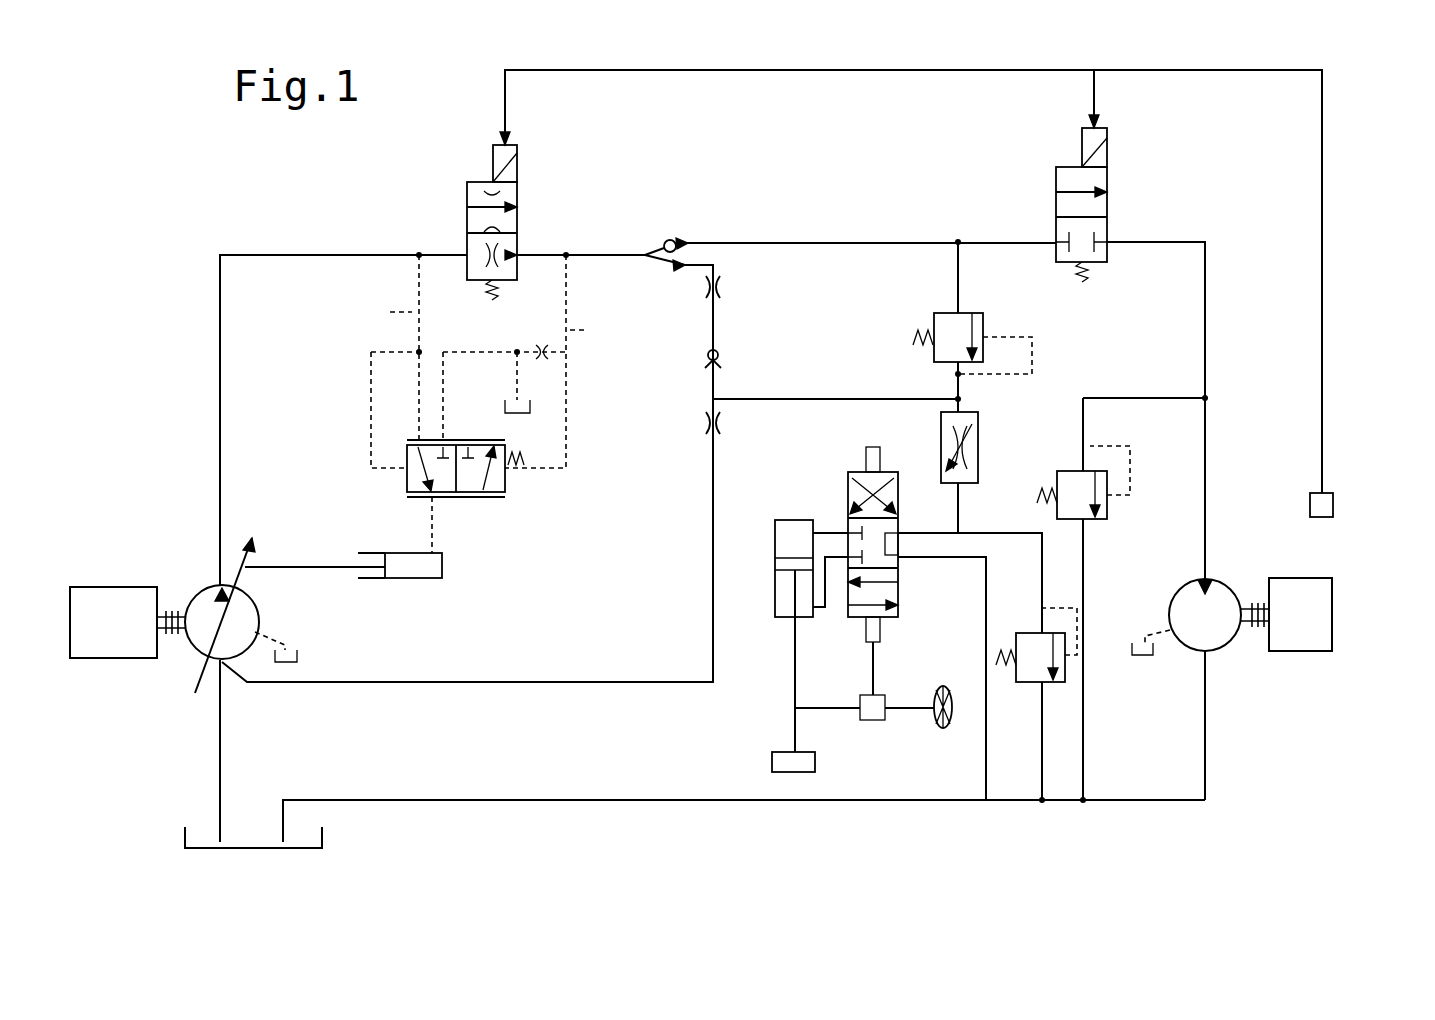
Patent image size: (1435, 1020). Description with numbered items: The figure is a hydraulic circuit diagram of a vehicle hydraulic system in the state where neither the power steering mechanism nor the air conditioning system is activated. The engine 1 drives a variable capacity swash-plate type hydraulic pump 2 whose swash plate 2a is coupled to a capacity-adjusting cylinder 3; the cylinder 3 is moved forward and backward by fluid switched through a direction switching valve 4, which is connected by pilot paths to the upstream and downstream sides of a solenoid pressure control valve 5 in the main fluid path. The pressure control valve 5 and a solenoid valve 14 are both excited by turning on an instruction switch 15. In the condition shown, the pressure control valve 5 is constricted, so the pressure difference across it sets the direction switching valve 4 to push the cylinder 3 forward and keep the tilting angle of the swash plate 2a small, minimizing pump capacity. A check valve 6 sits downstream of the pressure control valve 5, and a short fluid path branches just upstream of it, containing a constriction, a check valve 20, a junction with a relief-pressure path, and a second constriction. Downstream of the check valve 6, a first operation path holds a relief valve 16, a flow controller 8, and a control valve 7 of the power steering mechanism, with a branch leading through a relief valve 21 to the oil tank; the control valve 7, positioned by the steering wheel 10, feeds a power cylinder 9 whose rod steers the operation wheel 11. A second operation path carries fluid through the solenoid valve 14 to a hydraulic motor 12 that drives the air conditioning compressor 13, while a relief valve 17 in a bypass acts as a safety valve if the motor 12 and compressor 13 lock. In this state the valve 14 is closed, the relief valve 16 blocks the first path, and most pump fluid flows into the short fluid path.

The engine 1 is at (105, 658).
The hydraulic pump 2 is at (210, 586).
The swash plate 2a is at (262, 550).
The cylinder 3 is at (400, 578).
The direction switching valve 4 is at (505, 490).
The solenoid pressure control valve 5 is at (518, 214).
The check valve 6 is at (655, 250).
The control valve 7 is at (898, 578).
The flow controller 8 is at (978, 455).
The power cylinder 9 is at (775, 590).
The steering wheel 10 is at (952, 712).
The operation wheel 11 is at (815, 762).
The hydraulic motor 12 is at (1180, 645).
The air conditioning compressor 13 is at (1332, 620).
The solenoid valve 14 is at (1107, 205).
The instruction switch 15 is at (1333, 505).
The relief valve 16 is at (983, 327).
The relief valve 17 is at (1107, 515).
The check valve 20 is at (706, 352).
The relief valve 21 is at (1020, 685).